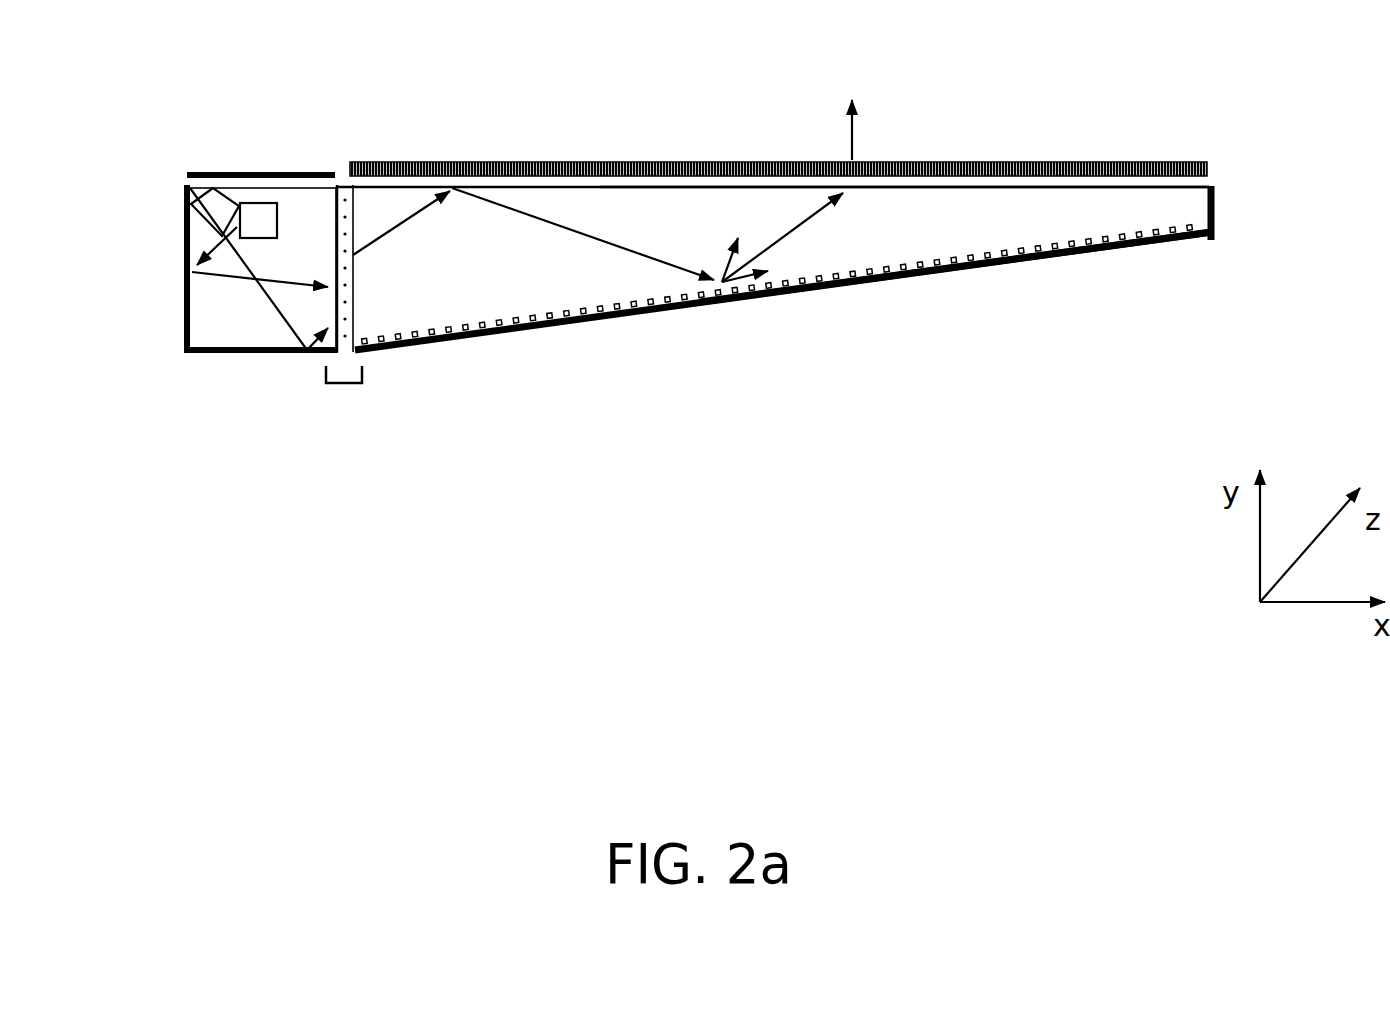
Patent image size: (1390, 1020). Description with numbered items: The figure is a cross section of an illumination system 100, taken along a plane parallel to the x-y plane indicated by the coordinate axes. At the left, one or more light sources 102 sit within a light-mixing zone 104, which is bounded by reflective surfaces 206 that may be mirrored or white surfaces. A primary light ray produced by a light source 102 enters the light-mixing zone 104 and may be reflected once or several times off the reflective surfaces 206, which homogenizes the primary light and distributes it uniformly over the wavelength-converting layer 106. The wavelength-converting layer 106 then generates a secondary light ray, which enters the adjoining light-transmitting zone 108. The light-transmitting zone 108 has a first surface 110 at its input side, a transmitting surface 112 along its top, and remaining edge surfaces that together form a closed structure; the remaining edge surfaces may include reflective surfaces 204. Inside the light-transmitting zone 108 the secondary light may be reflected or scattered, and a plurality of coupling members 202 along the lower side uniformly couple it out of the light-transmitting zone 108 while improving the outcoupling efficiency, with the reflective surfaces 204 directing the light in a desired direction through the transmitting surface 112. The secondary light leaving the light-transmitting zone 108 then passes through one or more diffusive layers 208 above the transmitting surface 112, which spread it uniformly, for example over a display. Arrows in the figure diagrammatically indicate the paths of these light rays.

The illumination system 100 is at (172, 588).
The light source 102 is at (257, 203).
The light-mixing zone 104 is at (323, 277).
The wavelength-converting layer 106 is at (343, 383).
The light-transmitting zone 108 is at (543, 277).
The first surface 110 is at (353, 302).
The transmitting surface 112 is at (978, 188).
The coupling members 202 is at (563, 323).
The reflective surfaces 204 is at (1218, 207).
The reflective surfaces 206 is at (205, 175).
The diffusive layers 208 is at (780, 160).